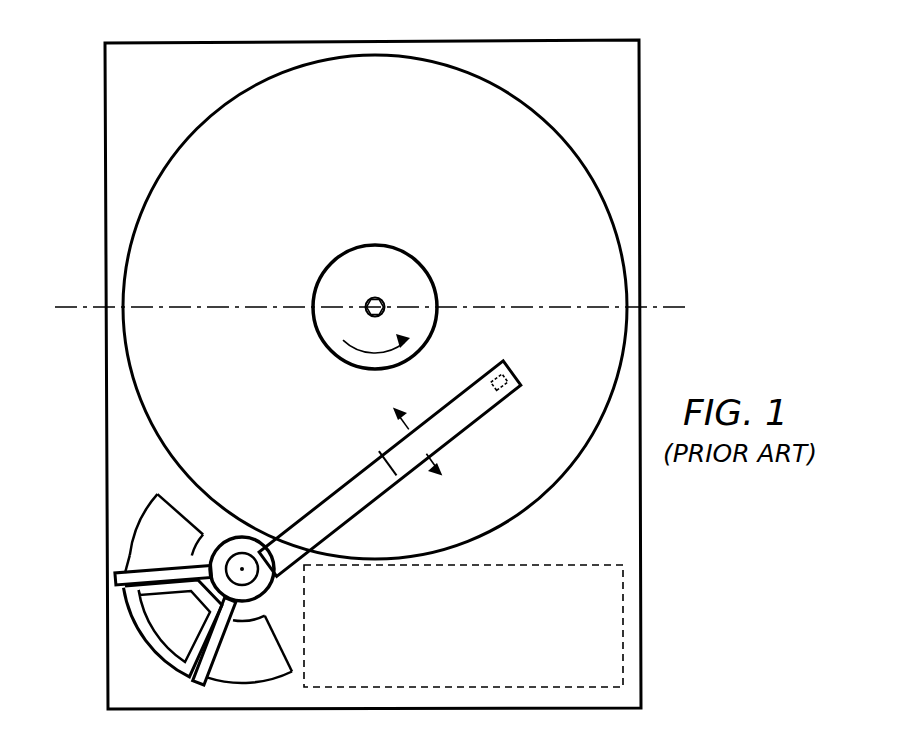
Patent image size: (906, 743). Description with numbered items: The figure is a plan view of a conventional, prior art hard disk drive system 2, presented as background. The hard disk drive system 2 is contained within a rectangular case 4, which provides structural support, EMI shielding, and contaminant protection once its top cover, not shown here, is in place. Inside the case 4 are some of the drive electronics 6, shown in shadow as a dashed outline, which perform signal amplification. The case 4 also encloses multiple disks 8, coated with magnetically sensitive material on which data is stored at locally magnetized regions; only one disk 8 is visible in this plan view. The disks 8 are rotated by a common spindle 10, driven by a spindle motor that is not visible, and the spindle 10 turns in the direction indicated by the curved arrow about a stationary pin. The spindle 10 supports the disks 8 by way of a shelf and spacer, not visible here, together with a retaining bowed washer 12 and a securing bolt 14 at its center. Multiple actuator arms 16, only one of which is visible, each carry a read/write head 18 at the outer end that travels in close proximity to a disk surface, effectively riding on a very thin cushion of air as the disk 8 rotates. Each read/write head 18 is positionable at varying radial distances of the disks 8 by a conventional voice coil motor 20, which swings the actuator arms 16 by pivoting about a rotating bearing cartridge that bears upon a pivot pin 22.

The hard disk drive system 2 is at (73, 306).
The rectangular case 4 is at (106, 90).
The drive electronics 6 is at (590, 565).
The disks 8 is at (382, 141).
The spindle 10 is at (346, 255).
The retaining bowed washer 12 is at (321, 329).
The securing bolt 14 is at (376, 297).
The actuator arms 16 is at (324, 494).
The read/write head 18 is at (508, 378).
The voice coil motor 20 is at (150, 479).
The pivot pin 22 is at (248, 572).